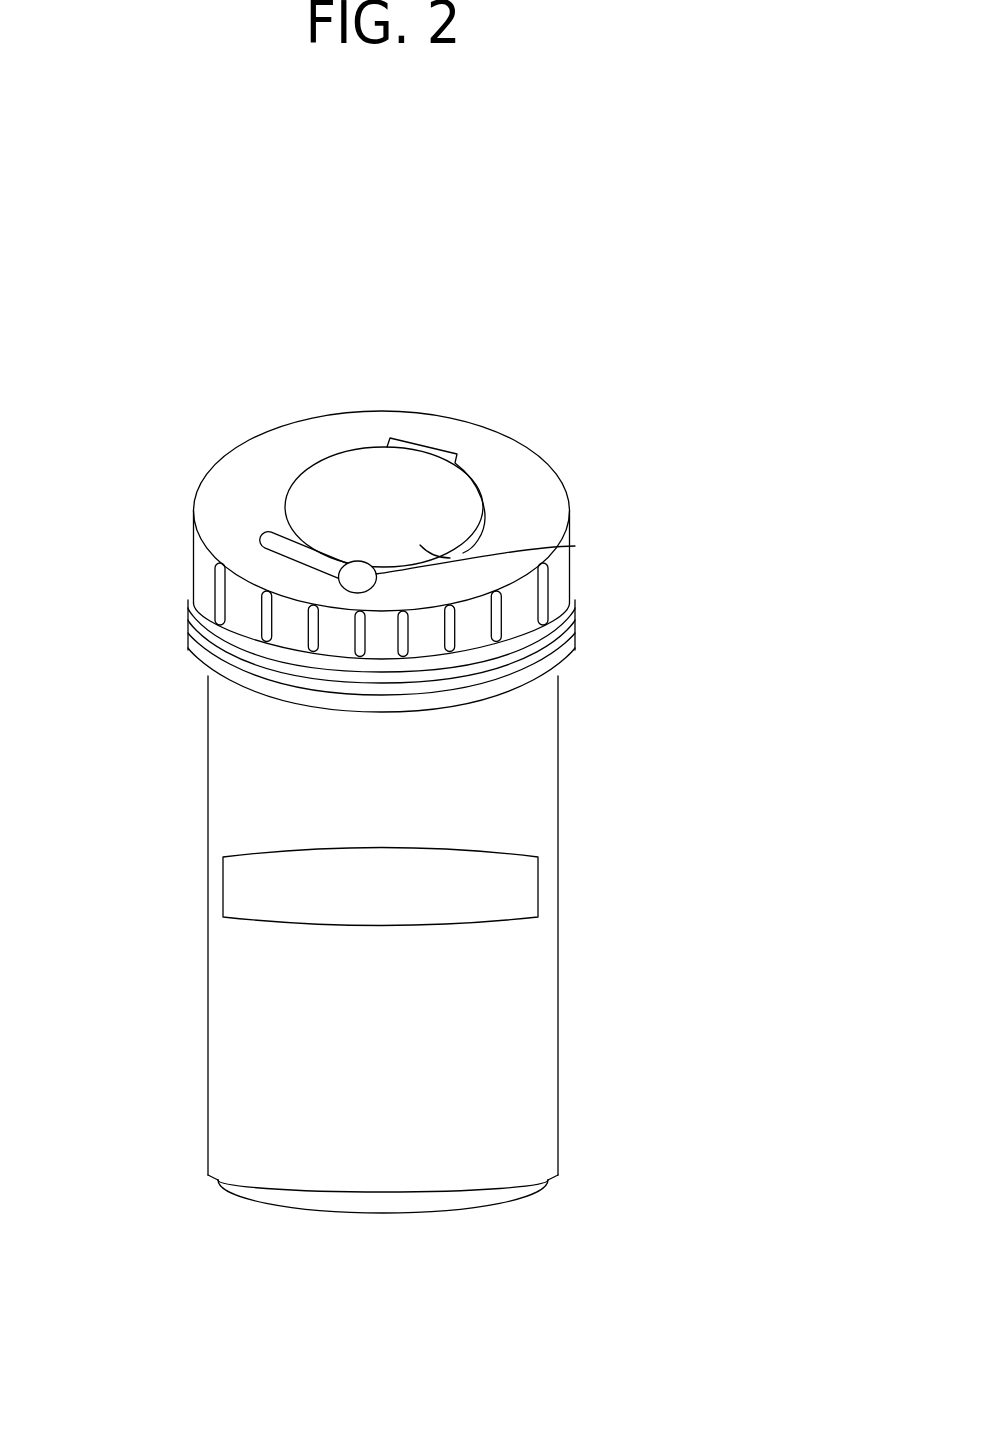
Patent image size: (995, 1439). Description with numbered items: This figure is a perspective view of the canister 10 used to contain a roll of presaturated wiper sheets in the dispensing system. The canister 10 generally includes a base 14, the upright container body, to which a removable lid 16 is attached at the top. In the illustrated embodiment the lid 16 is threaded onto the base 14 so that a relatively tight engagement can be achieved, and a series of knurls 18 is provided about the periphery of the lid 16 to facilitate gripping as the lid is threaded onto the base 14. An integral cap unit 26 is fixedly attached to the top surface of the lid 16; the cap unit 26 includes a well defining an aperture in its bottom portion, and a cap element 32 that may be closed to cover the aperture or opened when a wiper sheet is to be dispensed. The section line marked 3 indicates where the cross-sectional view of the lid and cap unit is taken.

The canister 10 is at (622, 873).
The base 14 is at (513, 1098).
The removable lid 16 is at (542, 483).
The knurls 18 is at (263, 640).
The cap unit 26 is at (322, 508).
The cap element 32 is at (575, 546).
The section line 3- 3 is at (397, 475).